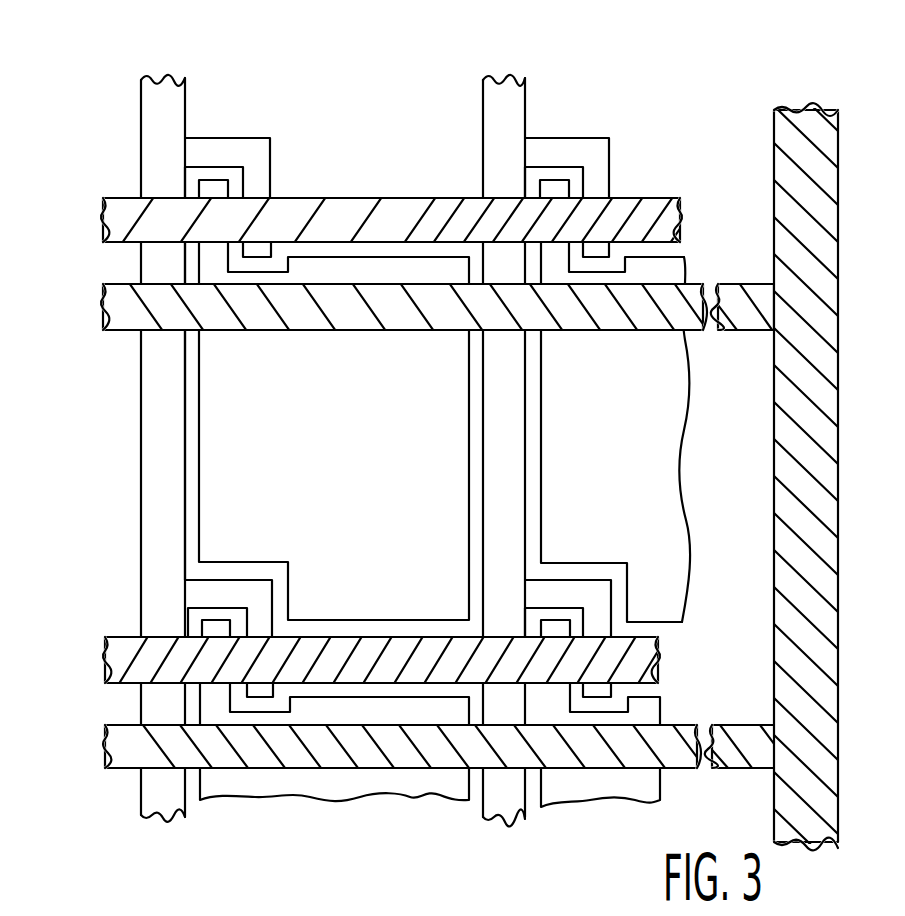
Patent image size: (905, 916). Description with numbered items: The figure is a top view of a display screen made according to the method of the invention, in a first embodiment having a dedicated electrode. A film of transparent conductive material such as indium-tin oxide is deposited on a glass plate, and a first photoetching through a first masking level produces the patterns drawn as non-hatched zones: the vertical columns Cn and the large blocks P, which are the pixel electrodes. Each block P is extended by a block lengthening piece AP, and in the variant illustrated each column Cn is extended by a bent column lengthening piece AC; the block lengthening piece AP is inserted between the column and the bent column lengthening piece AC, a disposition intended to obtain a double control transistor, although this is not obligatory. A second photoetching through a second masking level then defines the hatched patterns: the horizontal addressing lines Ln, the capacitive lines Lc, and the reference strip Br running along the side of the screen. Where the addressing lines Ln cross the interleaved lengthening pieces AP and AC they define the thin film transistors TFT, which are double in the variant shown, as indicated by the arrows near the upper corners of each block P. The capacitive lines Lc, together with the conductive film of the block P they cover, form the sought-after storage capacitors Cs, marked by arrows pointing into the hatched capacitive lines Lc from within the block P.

The column Cn is at (157, 97).
The addressing line Ln is at (127, 213).
The capacitive line Lc is at (108, 326).
The storage capacitor Cs is at (291, 333).
The block P is at (344, 503).
The block lengthening piece AP is at (215, 182).
The column lengthening piece AC is at (253, 145).
The thin film transistor TFT is at (273, 172).
The reference strip Br is at (802, 120).